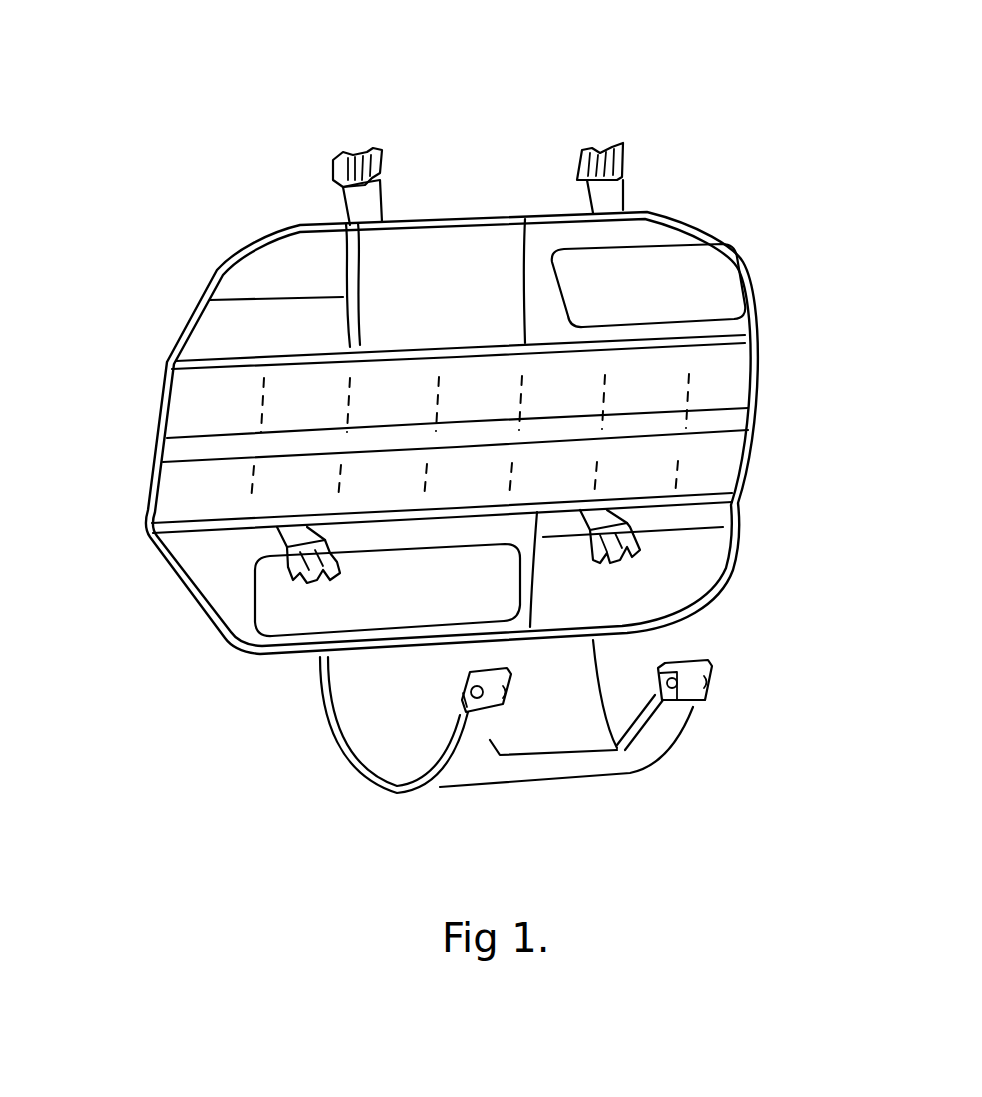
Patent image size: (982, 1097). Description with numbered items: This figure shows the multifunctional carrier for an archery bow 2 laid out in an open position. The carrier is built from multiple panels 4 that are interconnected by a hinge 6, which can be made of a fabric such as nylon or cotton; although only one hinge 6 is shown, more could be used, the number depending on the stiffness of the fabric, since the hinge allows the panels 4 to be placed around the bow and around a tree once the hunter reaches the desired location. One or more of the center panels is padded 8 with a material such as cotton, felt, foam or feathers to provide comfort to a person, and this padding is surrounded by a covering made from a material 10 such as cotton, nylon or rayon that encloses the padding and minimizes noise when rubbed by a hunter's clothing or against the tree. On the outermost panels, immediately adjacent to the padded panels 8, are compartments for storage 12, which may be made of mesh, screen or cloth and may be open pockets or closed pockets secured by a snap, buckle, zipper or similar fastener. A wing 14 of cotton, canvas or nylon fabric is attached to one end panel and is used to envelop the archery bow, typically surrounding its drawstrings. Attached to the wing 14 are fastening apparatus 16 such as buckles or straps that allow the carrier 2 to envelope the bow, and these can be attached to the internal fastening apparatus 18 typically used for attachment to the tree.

The multifunctional carrier for an archery bow 2 is at (238, 86).
The panels 4 is at (243, 330).
The hinge 6 is at (708, 423).
The padded center panel 8 is at (217, 397).
The covering material 10 is at (637, 480).
The storage compartments 12 is at (287, 268).
The wing 14 is at (358, 698).
The fastening apparatus 16 is at (492, 700).
The internal fastening apparatus 18 is at (297, 533).